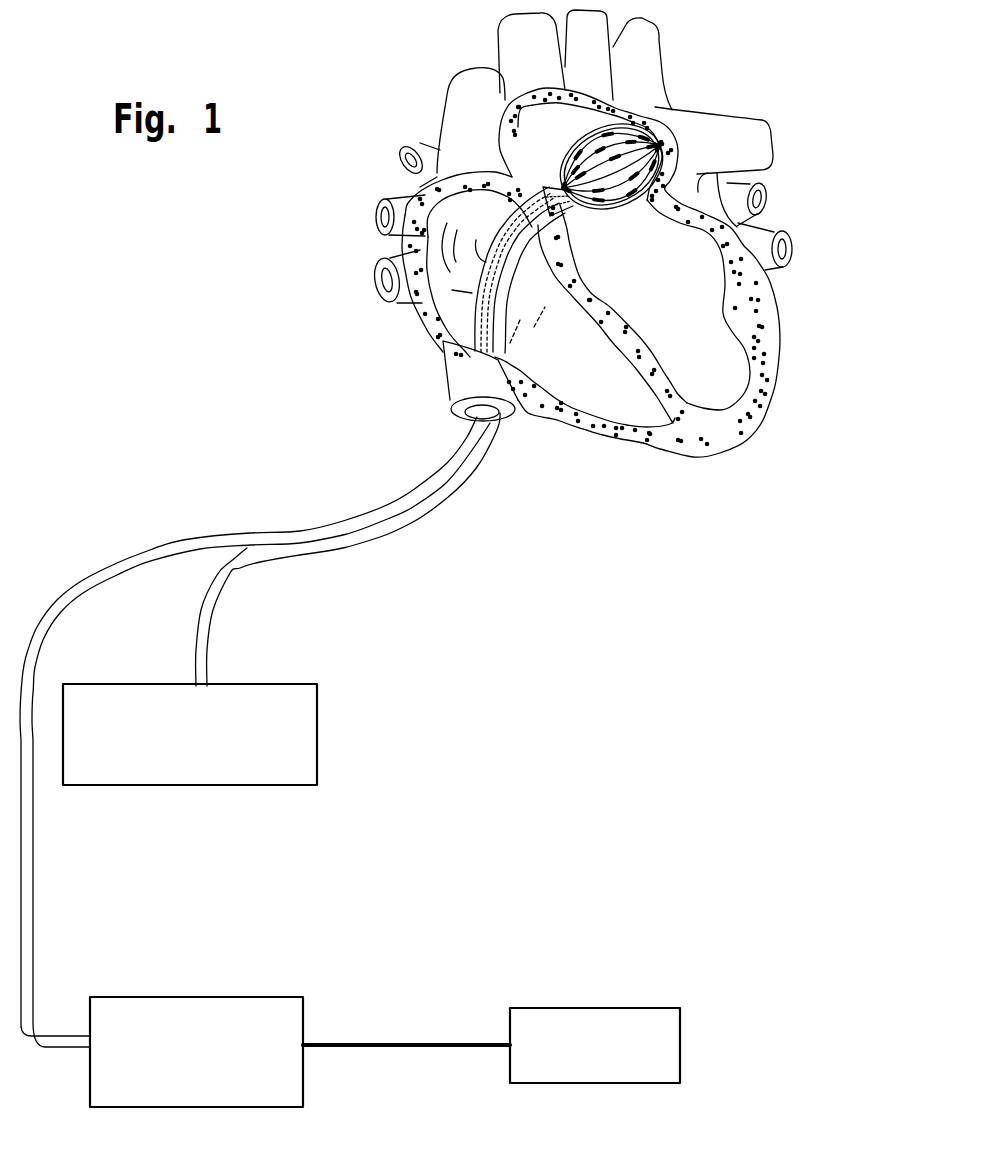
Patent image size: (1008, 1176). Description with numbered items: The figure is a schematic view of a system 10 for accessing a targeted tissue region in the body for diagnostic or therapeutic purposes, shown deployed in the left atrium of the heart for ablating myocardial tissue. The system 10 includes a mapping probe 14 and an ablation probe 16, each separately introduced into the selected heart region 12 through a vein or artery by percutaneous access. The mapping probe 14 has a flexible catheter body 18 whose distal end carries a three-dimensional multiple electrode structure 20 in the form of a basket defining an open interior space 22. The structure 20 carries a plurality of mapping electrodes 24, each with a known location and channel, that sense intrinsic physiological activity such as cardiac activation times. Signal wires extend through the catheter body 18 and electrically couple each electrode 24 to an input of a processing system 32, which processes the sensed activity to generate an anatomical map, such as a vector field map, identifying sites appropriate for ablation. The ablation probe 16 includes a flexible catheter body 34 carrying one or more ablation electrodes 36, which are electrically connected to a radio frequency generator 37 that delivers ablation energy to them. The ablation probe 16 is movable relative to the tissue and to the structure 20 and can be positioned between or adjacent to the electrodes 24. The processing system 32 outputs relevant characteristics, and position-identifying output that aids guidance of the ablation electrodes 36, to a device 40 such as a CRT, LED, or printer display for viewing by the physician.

The system 10 is at (496, 648).
The heart region 12 is at (697, 299).
The mapping probe 14 is at (477, 281).
The ablation probe 16 is at (575, 228).
The catheter body 18 is at (498, 243).
The multiple electrode structure 20 is at (690, 144).
The open interior space 22 is at (597, 139).
The mapping electrodes 24 is at (586, 144).
The processing system 32 is at (228, 997).
The catheter body 34 is at (517, 322).
The ablation electrodes 36 is at (639, 135).
The radio frequency generator 37 is at (174, 788).
The device 40 is at (617, 1008).